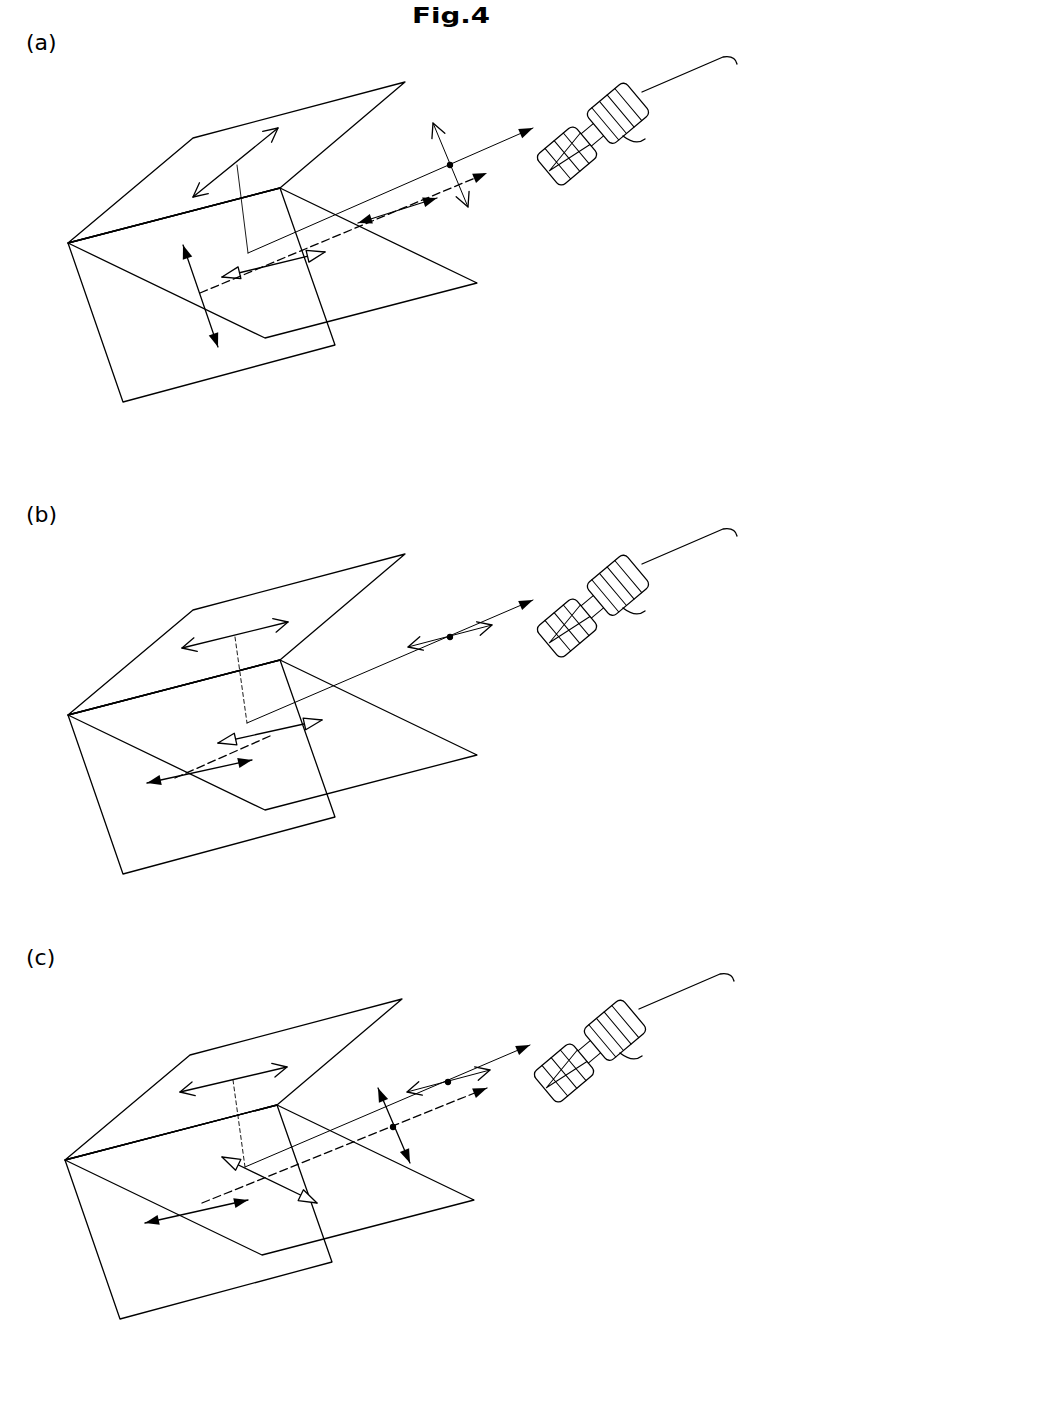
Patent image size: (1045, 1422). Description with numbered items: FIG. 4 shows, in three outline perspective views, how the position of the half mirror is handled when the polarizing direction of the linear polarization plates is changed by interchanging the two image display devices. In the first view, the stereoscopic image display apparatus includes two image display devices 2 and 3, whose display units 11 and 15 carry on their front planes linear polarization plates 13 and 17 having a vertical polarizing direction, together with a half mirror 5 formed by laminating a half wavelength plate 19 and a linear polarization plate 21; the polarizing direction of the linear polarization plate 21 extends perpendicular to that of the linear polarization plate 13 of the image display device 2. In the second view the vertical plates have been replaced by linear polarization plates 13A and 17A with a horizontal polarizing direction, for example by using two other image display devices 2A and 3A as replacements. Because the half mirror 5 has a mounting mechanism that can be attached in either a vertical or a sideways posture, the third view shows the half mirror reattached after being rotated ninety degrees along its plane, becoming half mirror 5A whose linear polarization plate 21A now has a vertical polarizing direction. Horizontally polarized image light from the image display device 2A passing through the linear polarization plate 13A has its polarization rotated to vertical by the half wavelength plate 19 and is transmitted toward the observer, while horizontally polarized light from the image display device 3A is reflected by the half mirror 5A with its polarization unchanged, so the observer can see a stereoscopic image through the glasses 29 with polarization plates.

The image display device 2 is at (198, 308).
The image display device 3 is at (235, 167).
The half mirror 5 is at (314, 491).
The display unit 11 is at (191, 768).
The linear polarization plate 13 is at (177, 380).
The display unit 15 is at (231, 624).
The linear polarization plate 17 is at (177, 158).
The half wavelength plate 19 is at (322, 714).
The linear polarization plate 21 is at (420, 300).
The glasses 29 is at (617, 167).
The image display device 2A is at (191, 1004).
The image display device 3A is at (231, 860).
The linear polarization plate 13A is at (178, 853).
The linear polarization plate 17A is at (178, 625).
The half mirror 5A is at (322, 1171).
The linear polarization plate 21A is at (417, 1218).